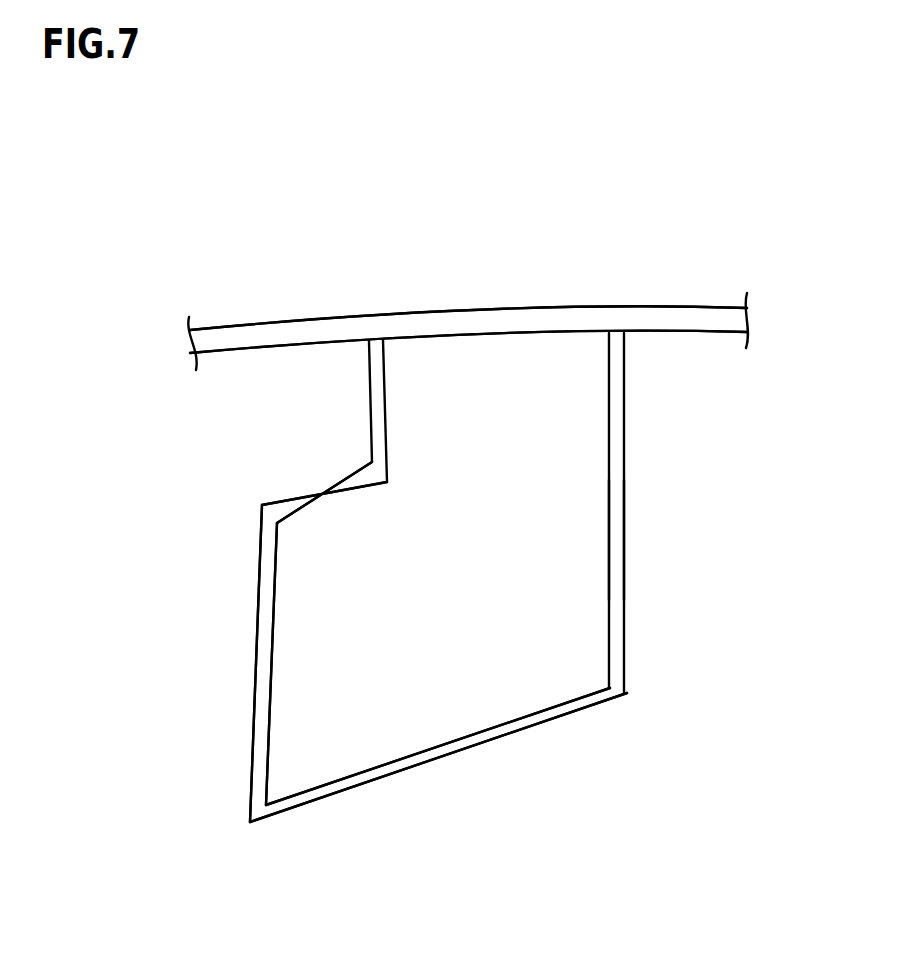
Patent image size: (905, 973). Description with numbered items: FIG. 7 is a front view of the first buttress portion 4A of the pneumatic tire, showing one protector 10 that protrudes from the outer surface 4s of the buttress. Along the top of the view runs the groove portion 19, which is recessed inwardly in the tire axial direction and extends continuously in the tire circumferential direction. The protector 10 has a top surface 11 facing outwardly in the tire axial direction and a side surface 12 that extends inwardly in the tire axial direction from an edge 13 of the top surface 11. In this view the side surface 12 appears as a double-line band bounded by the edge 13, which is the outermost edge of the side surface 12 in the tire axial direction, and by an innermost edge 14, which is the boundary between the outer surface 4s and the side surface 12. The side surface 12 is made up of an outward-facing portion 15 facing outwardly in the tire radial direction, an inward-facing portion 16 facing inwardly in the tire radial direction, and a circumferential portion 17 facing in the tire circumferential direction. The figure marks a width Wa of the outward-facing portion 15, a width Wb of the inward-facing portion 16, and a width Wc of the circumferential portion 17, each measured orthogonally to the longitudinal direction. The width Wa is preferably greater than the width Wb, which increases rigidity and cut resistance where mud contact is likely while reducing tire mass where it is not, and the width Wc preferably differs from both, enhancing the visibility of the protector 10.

The first buttress portion 4A is at (145, 315).
The protector 10 is at (392, 272).
The top surface 11 is at (513, 372).
The groove portion 19 is at (664, 322).
The side surface 12 is at (616, 452).
The edge 13 is at (609, 511).
The innermost edge 14 is at (250, 767).
The outward-facing portion 15 is at (318, 513).
The inward-facing portion 16 is at (320, 807).
The circumferential portion 17 is at (247, 637).
The width of the outward-facing portion Wa is at (358, 530).
The width of the inward-facing portion Wb is at (417, 713).
The width of the circumferential portion Wc is at (307, 678).
The outer surface 4s is at (622, 779).